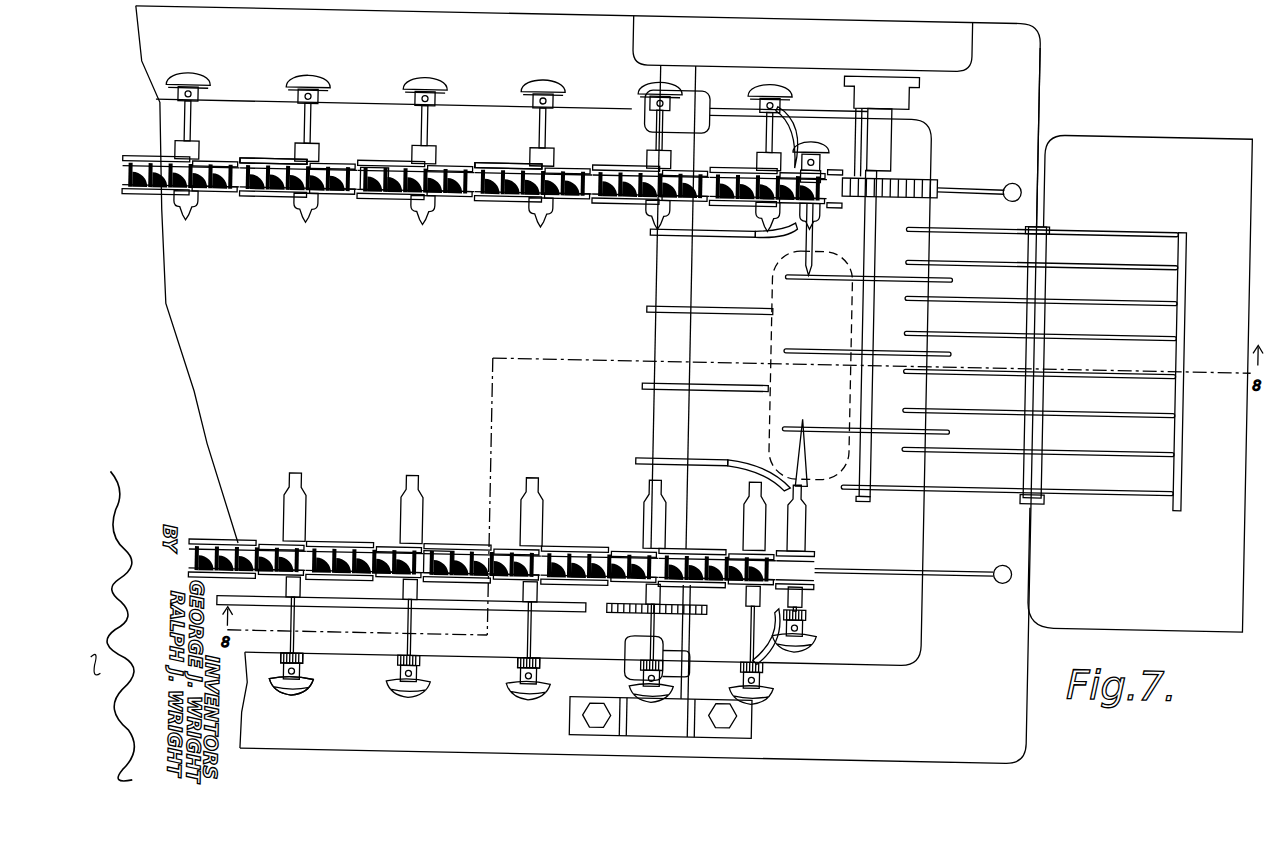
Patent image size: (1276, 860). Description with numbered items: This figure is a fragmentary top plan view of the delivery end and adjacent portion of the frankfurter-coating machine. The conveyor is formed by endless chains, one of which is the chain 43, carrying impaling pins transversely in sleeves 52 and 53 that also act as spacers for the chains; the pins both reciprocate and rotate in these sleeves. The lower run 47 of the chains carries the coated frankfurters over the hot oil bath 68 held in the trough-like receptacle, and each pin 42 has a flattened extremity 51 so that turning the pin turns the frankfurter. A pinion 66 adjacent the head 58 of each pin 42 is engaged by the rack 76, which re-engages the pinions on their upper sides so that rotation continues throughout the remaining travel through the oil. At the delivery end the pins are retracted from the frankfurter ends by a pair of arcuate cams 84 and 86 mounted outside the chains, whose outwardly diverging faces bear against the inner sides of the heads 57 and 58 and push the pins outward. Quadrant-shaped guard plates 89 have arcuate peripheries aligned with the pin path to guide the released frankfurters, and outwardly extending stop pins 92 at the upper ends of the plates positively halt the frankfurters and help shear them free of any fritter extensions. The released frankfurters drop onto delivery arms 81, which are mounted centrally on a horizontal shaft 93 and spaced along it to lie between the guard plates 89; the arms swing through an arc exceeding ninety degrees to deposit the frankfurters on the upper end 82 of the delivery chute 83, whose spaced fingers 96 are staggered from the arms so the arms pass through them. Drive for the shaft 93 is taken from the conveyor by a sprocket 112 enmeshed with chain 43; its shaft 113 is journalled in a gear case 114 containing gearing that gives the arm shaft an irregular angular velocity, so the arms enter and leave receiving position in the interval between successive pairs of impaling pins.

The impaling pin 42 is at (300, 516).
The endless chain 43 is at (373, 183).
The lower run 47 is at (257, 165).
The flattened extremity 51 is at (542, 480).
The sleeve 52 is at (481, 170).
The sleeve 53 is at (440, 548).
The head 57 is at (760, 88).
The head 58 is at (420, 685).
The pinion 66 is at (304, 658).
The hot oil bath 68 is at (412, 339).
The rack 76 is at (497, 614).
The delivery arm 81 is at (880, 280).
The upper end of delivery chute 82 is at (912, 254).
The delivery chute 83 is at (1068, 222).
The cam 84 is at (792, 118).
The cam 86 is at (800, 650).
The guard plate 89 is at (735, 308).
The stop pin 92 is at (748, 236).
The horizontal shaft 93 is at (870, 216).
The finger 96 is at (1116, 262).
The sprocket 112 is at (913, 184).
The shaft 113 is at (876, 167).
The gear case 114 is at (955, 46).